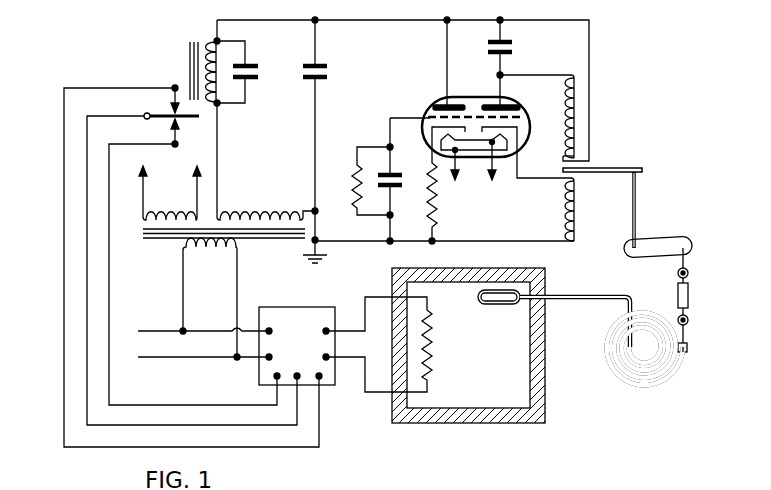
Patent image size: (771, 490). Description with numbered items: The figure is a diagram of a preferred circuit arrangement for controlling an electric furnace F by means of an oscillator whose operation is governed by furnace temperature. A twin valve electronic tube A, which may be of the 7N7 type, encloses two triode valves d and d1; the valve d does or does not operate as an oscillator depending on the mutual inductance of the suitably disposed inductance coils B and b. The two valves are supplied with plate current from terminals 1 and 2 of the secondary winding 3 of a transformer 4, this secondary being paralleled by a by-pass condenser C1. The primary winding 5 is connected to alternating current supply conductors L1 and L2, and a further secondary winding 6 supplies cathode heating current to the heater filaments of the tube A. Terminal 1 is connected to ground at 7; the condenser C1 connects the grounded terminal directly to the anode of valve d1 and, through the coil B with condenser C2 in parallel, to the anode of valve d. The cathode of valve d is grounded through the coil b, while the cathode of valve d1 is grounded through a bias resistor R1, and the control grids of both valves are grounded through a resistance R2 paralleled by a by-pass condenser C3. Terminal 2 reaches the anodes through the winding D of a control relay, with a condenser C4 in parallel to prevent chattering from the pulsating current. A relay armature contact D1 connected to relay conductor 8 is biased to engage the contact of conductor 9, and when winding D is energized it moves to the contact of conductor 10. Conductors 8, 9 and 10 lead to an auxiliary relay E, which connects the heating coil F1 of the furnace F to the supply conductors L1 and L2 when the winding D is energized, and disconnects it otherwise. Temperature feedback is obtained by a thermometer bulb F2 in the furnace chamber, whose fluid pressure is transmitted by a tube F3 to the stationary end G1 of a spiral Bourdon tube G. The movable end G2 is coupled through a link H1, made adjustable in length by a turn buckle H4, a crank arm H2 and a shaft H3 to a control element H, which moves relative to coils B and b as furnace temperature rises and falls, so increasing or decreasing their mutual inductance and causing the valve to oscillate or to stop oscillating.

The control relay winding D is at (211, 38).
The relay armature contact D1 is at (163, 112).
The condenser C4 is at (246, 64).
The by-pass condenser C1 is at (321, 64).
The condenser C2 is at (513, 50).
The twin valve electronic tube A is at (489, 97).
The triode valve d1 is at (432, 114).
The triode valve d is at (516, 113).
The inductance coil B is at (567, 118).
The control element H is at (605, 170).
The shaft H3 is at (637, 212).
The crank arm H2 is at (664, 239).
The turn buckle H4 is at (689, 298).
The link H1 is at (687, 333).
The movable end of Bourdon tube G2 is at (689, 348).
The Bourdon tube G is at (624, 386).
The stationary end of Bourdon tube G1 is at (633, 314).
The electric furnace F is at (547, 346).
The heating coil F1 is at (431, 322).
The thermometer bulb F2 is at (501, 306).
The tube F3 is at (567, 296).
The auxiliary relay E is at (297, 346).
The alternating current supply conductor L1 is at (172, 330).
The alternating current supply conductor L2 is at (178, 360).
The relay conductor 10 is at (64, 154).
The relay conductor 9 is at (108, 174).
The relay conductor 8 is at (88, 190).
The transformer terminal 2 is at (219, 157).
The secondary winding 6 is at (152, 218).
The secondary winding 3 is at (246, 218).
The transformer 4 is at (158, 240).
The primary winding 5 is at (190, 252).
The transformer terminal 1 is at (311, 242).
The ground 7 is at (329, 256).
The resistance R2 is at (355, 166).
The by-pass condenser C3 is at (393, 173).
The bias resistor R1 is at (437, 202).
The inductance coil b is at (567, 208).